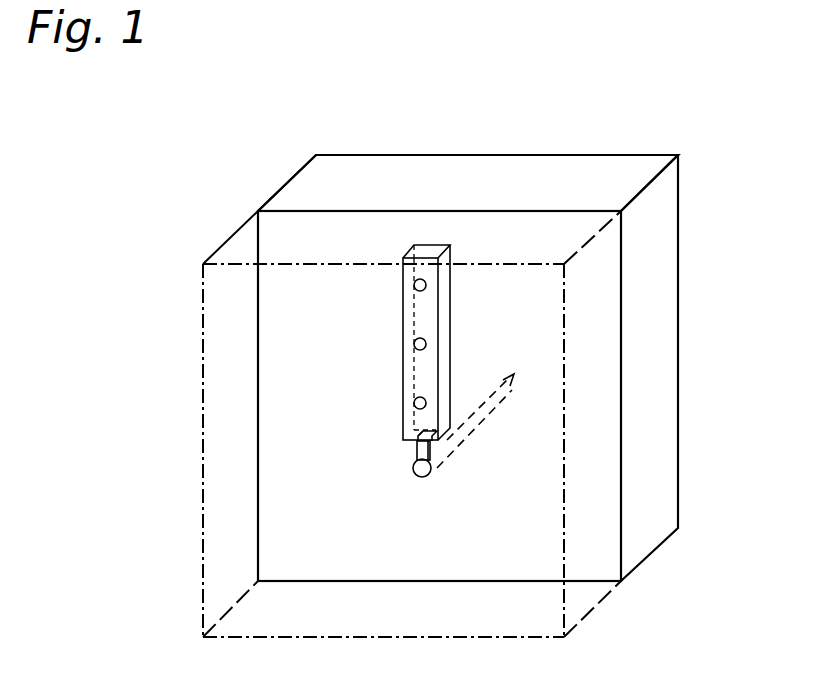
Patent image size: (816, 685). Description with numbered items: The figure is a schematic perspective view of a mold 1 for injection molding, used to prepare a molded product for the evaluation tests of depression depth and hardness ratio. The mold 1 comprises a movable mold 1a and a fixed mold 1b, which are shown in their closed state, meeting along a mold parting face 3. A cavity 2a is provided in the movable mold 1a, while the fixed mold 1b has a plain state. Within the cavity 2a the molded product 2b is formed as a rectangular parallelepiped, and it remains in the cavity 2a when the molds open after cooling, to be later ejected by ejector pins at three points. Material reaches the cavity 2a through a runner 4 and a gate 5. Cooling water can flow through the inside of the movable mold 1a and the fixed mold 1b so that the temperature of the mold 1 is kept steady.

The mold 1 is at (419, 342).
The movable mold 1a is at (221, 236).
The fixed mold 1b is at (283, 175).
The cavity 2a is at (592, 342).
The molded product 2b is at (443, 345).
The mold parting face 3 is at (623, 212).
The runner 4 is at (448, 437).
The gate 5 is at (412, 447).